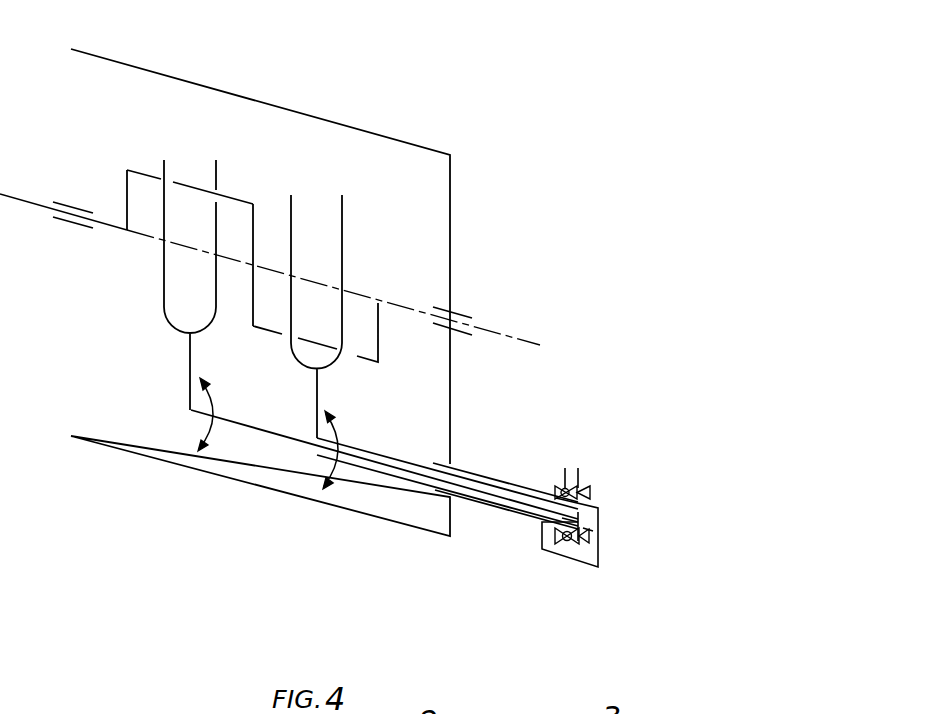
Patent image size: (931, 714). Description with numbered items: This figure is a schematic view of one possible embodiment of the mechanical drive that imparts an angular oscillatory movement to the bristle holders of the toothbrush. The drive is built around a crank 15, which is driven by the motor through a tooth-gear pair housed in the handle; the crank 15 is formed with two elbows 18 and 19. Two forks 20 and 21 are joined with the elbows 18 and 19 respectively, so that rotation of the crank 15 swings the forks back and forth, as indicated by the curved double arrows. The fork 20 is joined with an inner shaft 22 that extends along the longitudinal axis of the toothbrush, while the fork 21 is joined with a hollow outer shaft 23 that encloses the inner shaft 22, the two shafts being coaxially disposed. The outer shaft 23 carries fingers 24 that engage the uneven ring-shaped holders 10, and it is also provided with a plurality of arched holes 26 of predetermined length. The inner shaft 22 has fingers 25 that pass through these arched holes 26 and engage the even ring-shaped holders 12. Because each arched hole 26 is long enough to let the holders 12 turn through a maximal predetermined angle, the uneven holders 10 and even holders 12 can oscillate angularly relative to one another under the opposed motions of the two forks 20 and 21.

The uneven holders 10 is at (563, 487).
The even holders 12 is at (584, 494).
The crank 15 is at (252, 265).
The elbow 18 is at (191, 186).
The elbow 19 is at (362, 352).
The fork 20 is at (164, 297).
The fork 21 is at (304, 367).
The inner shaft 22 is at (404, 470).
The outer shaft 23 is at (436, 489).
The fingers 24 is at (558, 537).
The fingers 25 is at (571, 545).
The arched holes 26 is at (572, 512).